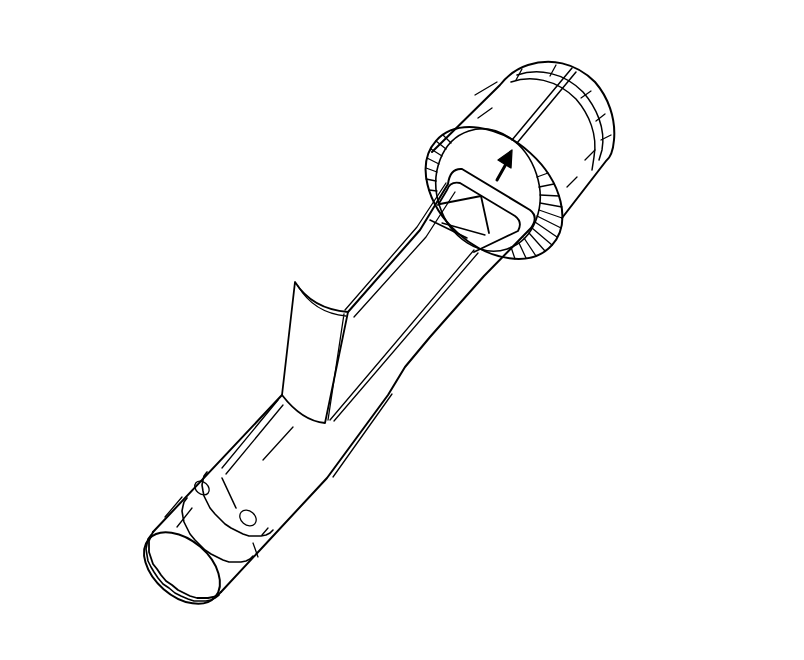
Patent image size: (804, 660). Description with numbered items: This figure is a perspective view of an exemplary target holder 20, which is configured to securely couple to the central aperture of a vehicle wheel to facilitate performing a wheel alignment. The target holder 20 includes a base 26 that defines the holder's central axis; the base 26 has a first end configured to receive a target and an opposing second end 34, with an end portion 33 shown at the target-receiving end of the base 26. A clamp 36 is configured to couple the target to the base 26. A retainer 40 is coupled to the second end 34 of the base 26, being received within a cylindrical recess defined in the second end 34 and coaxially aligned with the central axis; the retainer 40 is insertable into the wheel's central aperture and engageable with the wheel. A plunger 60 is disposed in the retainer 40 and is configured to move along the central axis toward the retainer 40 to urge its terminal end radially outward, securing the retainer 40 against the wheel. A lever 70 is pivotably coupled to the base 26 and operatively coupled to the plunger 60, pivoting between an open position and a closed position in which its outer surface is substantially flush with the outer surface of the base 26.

The target holder 20 is at (247, 192).
The base 26 is at (467, 293).
The end cap 33 is at (148, 512).
The second end 34 is at (582, 49).
The clamp 36 is at (262, 535).
The retainer 40 is at (614, 118).
The plunger 60 is at (585, 73).
The lever 70 is at (298, 342).